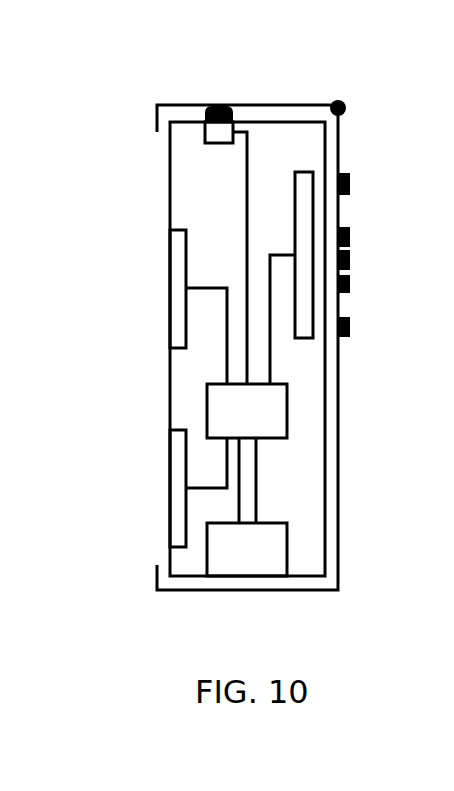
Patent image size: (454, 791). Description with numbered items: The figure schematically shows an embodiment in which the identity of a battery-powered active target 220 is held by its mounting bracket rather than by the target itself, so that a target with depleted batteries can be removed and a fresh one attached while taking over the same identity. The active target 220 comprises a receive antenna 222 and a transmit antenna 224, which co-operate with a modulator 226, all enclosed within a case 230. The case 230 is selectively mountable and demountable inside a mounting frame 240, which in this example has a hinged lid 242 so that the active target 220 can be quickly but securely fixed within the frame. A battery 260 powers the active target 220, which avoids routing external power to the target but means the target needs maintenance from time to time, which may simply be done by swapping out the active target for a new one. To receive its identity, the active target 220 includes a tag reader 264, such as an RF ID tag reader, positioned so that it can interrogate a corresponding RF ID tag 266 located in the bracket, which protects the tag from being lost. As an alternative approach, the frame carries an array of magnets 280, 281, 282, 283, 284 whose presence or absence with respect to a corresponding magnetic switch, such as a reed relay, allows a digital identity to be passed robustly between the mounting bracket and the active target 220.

The active target 220 is at (308, 90).
The hinged lid 242 is at (176, 105).
The mounting frame 240 is at (248, 593).
The case 230 is at (168, 188).
The RF ID tag 266 is at (221, 105).
The tag reader 264 is at (222, 144).
The receive antenna 222 is at (168, 290).
The transmit antenna 224 is at (168, 483).
The modulator 226 is at (287, 410).
The battery 260 is at (248, 550).
The magnet 280 is at (351, 182).
The magnet 281 is at (351, 237).
The magnet 282 is at (351, 259).
The magnet 283 is at (351, 285).
The magnet 284 is at (351, 330).